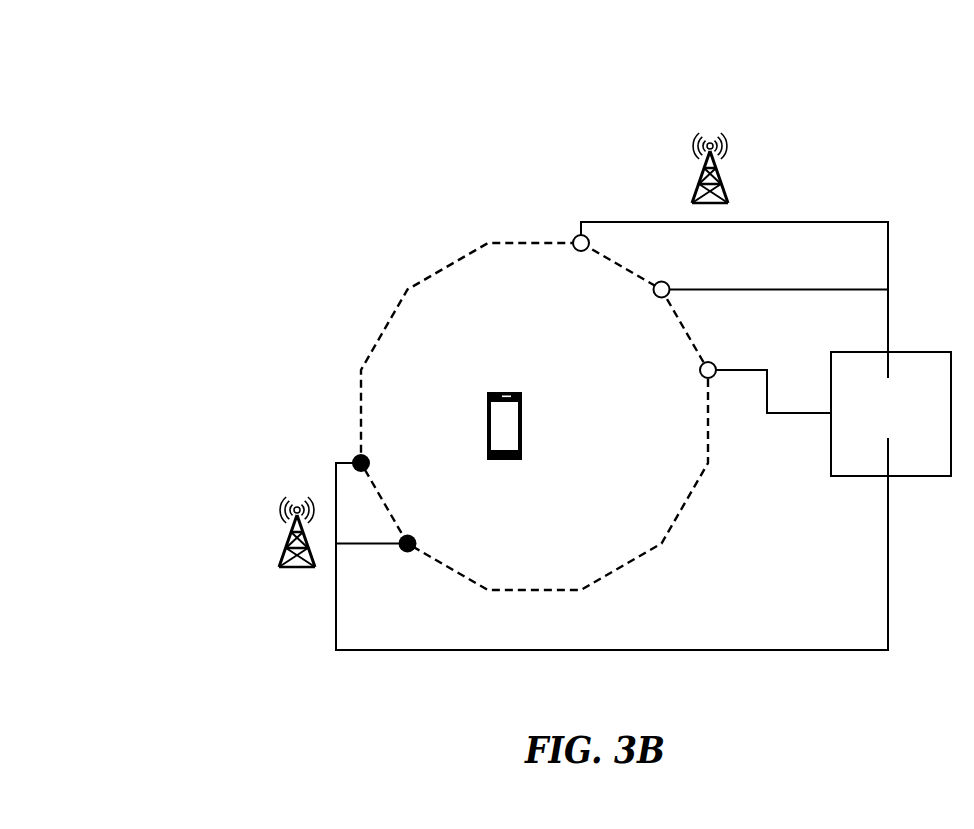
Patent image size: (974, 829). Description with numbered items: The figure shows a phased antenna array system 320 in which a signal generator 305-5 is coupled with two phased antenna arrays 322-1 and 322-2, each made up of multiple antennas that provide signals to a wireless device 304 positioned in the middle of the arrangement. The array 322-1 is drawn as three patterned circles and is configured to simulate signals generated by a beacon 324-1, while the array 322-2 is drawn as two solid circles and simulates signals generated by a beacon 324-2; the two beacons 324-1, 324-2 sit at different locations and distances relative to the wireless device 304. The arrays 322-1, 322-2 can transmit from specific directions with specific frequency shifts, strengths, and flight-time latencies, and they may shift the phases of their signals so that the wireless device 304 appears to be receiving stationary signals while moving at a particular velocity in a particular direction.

The phased antenna array system 320 is at (257, 65).
The phased antenna array 322-1 is at (557, 217).
The phased antenna array 322-2 is at (353, 428).
The wireless device 304 is at (503, 392).
The beacon 324-1 is at (708, 137).
The beacon 324-2 is at (295, 503).
The signal generator 305-5 is at (918, 435).